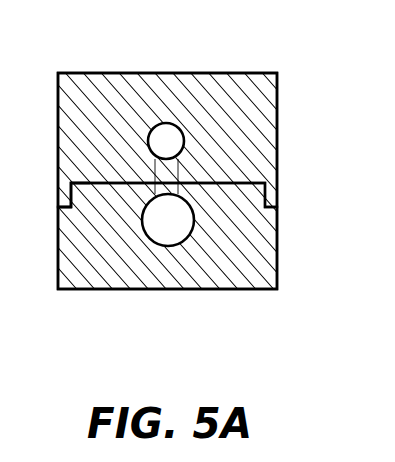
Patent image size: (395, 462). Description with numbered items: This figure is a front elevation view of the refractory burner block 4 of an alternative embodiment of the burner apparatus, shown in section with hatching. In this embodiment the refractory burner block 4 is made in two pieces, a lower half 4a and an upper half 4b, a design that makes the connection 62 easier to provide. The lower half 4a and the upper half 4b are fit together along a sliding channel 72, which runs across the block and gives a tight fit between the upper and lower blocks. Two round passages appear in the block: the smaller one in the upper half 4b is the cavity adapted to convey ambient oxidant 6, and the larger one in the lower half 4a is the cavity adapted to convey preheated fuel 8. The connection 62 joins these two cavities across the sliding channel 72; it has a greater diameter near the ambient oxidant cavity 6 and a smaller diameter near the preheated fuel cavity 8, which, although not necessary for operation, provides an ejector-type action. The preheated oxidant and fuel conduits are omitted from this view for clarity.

The refractory burner block 4 is at (252, 290).
The lower half 4a is at (277, 225).
The upper half 4b is at (277, 143).
The cavity adapted to convey ambient oxidant 6 is at (165, 123).
The cavity adapted to convey preheated fuel 8 is at (170, 246).
The connection 62 is at (180, 183).
The sliding channel 72 is at (83, 182).